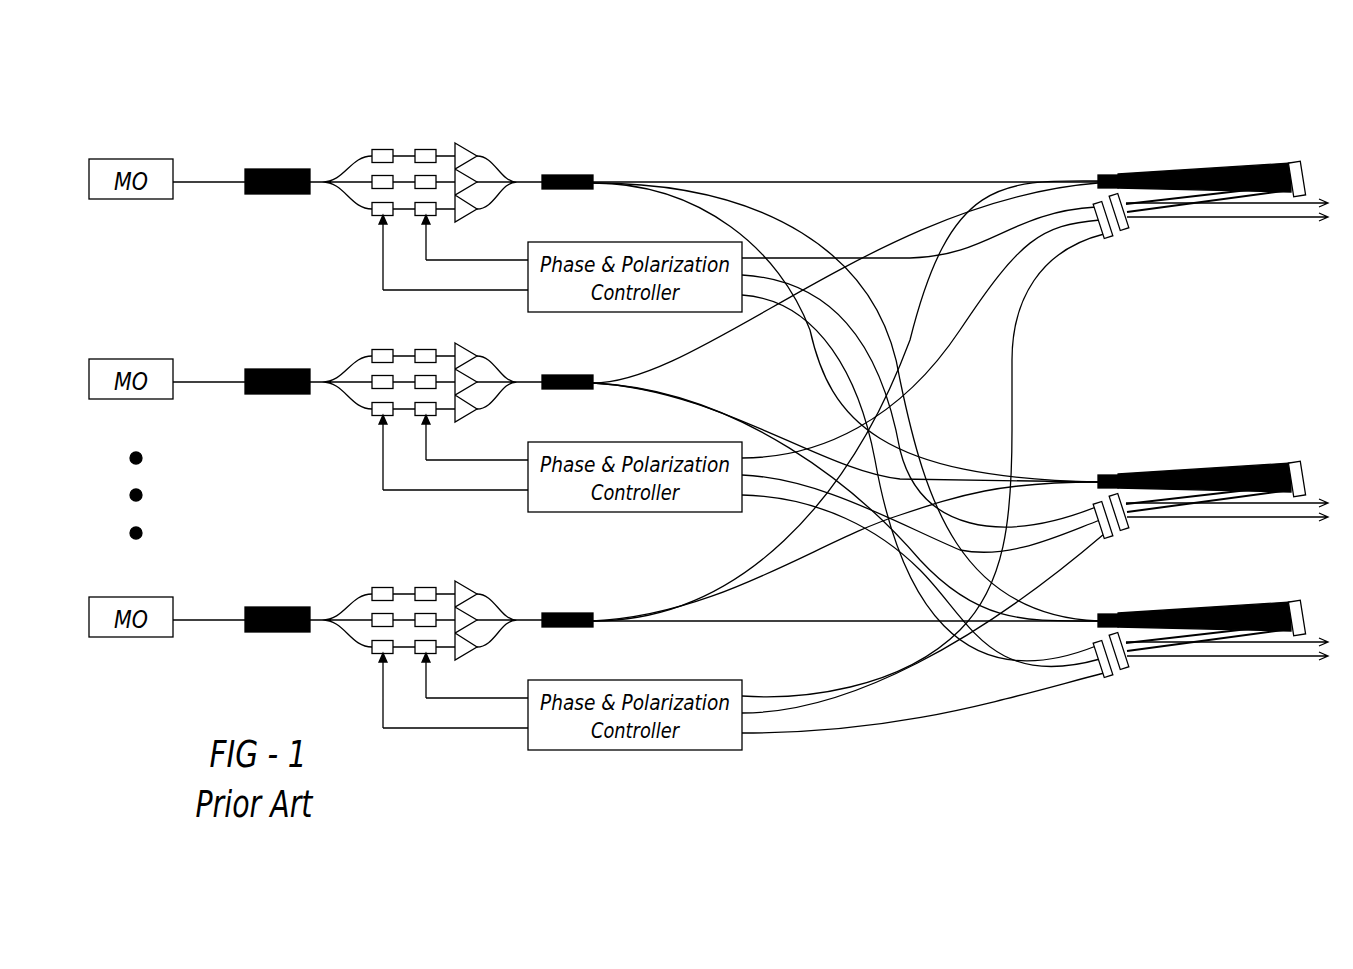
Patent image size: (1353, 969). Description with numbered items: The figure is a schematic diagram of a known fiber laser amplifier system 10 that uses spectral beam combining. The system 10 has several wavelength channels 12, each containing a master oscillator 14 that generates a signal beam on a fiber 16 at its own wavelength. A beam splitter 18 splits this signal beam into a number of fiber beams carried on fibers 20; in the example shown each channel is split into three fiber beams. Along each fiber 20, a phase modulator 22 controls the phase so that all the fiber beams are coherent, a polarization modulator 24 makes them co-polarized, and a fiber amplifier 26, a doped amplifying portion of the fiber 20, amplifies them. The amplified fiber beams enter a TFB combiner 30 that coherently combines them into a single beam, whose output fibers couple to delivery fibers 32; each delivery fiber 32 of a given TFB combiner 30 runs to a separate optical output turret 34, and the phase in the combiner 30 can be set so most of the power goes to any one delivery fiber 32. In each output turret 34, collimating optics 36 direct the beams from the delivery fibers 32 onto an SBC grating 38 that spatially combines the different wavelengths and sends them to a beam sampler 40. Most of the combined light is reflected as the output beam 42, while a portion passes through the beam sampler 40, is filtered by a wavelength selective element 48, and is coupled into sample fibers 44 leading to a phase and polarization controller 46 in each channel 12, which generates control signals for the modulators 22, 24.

The fiber laser amplifier system 10 is at (948, 56).
The wavelength channel 12 is at (88, 135).
The master oscillator 14 is at (145, 158).
The fiber 16 is at (210, 182).
The beam splitter 18 is at (280, 168).
The fibers 20 is at (347, 168).
The phase modulator 22 is at (381, 148).
The polarization modulator 24 is at (427, 148).
The fiber amplifier 26 is at (462, 143).
The TFB combiner 30 is at (567, 174).
The delivery fiber 32 is at (905, 180).
The optical output turret 34 is at (1204, 157).
The collimating optics 36 is at (1110, 173).
The SBC grating 38 is at (1302, 168).
The beam sampler 40 is at (1125, 222).
The output beam 42 is at (1242, 218).
The sample fibers 44 is at (1082, 240).
The phase and polarization controller 46 is at (605, 312).
The wavelength selective element 48 is at (1110, 233).